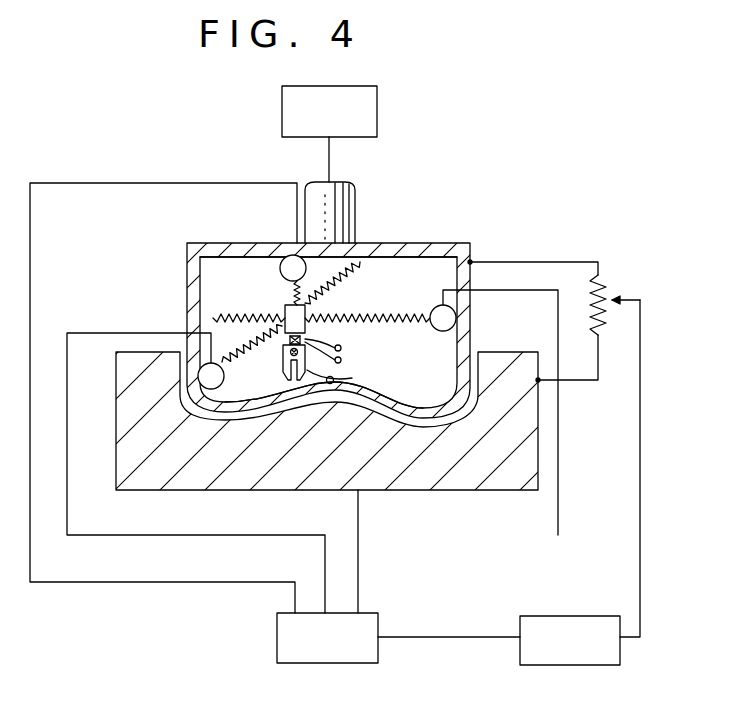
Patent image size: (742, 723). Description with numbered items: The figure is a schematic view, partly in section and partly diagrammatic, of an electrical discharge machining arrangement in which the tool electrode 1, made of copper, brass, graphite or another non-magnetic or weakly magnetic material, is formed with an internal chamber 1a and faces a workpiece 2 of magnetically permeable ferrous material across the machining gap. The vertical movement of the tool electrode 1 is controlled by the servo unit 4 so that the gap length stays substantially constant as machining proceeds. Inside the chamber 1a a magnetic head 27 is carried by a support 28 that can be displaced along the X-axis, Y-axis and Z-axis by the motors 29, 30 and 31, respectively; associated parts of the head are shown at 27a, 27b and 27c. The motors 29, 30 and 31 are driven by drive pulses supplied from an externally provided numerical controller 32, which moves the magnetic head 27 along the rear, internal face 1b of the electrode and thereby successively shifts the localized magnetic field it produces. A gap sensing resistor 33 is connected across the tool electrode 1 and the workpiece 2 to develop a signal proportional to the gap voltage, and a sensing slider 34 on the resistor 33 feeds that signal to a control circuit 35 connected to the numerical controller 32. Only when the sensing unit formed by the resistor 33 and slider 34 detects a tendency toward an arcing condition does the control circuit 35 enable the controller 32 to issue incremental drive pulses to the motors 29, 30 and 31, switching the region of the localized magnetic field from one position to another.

The tool electrode 1 is at (185, 275).
The internal chamber 1a is at (212, 262).
The rear face 1b is at (330, 386).
The workpiece 2 is at (116, 440).
The servo unit 4 is at (282, 108).
The magnetic head 27 is at (287, 377).
The pick-up 27a is at (352, 378).
The tool joint 27b is at (288, 342).
The pick-up wires 27c is at (343, 347).
The support 28 is at (283, 308).
The X-axis motor 29 is at (455, 334).
The Y-axis motor 30 is at (197, 376).
The Z-axis motor 31 is at (283, 270).
The numerical controller 32 is at (382, 629).
The gap sensing resistor 33 is at (592, 300).
The sensing slider 34 is at (634, 299).
The control circuit 35 is at (559, 616).